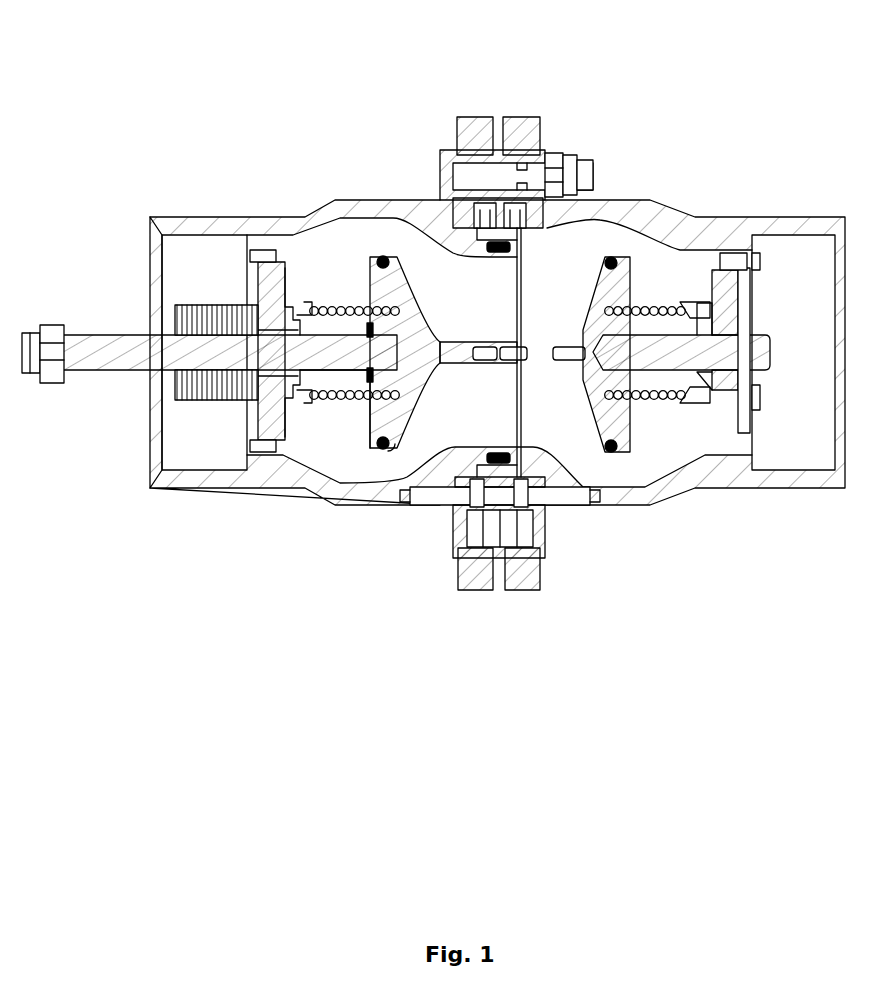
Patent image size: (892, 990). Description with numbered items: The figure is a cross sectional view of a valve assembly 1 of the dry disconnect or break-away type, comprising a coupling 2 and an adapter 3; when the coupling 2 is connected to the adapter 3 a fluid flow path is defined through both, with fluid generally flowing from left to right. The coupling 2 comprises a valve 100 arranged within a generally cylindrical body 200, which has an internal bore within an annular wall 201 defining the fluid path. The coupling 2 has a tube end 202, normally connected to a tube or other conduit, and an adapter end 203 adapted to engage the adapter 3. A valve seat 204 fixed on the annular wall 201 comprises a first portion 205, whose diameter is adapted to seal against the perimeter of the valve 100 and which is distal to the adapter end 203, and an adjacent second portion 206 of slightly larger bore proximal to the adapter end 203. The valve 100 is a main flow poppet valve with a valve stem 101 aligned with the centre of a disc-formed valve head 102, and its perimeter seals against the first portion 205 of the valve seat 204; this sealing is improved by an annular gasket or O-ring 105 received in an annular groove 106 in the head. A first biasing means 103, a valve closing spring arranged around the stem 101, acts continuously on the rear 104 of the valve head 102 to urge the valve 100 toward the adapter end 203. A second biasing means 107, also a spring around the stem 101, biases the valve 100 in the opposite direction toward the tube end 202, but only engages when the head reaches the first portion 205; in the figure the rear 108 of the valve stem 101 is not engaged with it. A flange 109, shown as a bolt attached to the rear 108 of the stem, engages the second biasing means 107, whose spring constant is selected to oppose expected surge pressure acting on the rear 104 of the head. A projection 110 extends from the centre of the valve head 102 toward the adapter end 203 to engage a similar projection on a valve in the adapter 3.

The valve assembly 1 is at (496, 100).
The coupling 2 is at (258, 203).
The adapter 3 is at (755, 208).
The valve 100 is at (250, 364).
The valve stem 101 is at (150, 335).
The valve head 102 is at (397, 292).
The first biasing means 103 is at (337, 305).
The rear of the valve head 104 is at (370, 432).
The annular gasket or O-ring 105 is at (386, 449).
The annular groove 106 is at (392, 449).
The second biasing means 107 is at (224, 302).
The rear of the valve stem 108 is at (85, 335).
The flange 109 is at (55, 385).
The projection 110 is at (466, 346).
The body 200 is at (340, 203).
The annular wall 201 is at (388, 208).
The tube end 202 is at (158, 262).
The adapter end 203 is at (530, 290).
The valve seat 204 is at (470, 256).
The first portion 205 is at (492, 253).
The second portion 206 is at (515, 262).